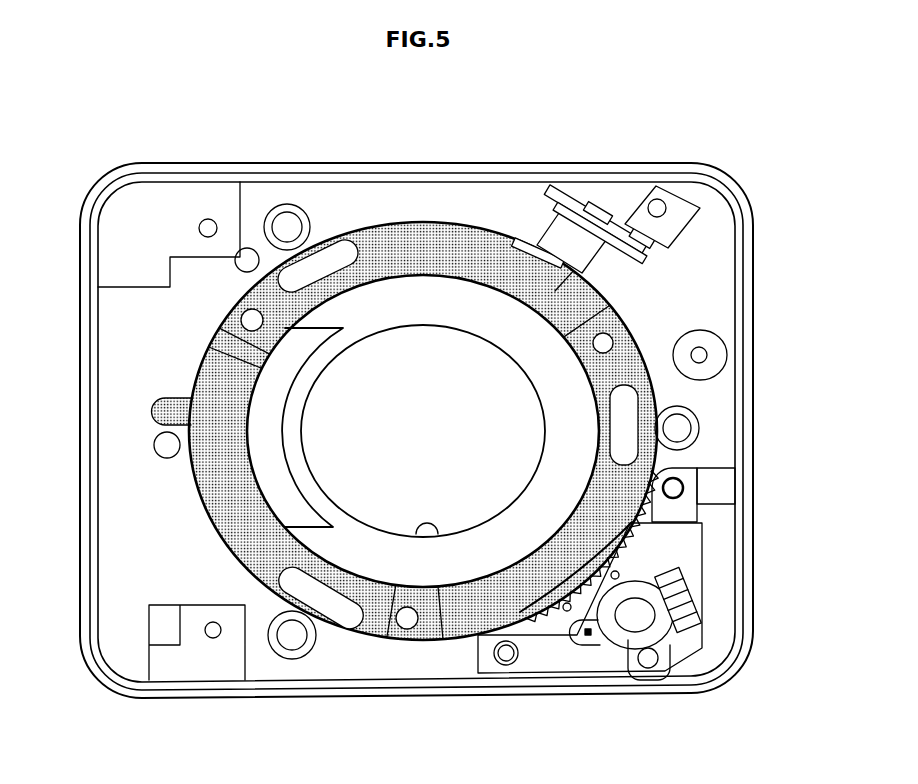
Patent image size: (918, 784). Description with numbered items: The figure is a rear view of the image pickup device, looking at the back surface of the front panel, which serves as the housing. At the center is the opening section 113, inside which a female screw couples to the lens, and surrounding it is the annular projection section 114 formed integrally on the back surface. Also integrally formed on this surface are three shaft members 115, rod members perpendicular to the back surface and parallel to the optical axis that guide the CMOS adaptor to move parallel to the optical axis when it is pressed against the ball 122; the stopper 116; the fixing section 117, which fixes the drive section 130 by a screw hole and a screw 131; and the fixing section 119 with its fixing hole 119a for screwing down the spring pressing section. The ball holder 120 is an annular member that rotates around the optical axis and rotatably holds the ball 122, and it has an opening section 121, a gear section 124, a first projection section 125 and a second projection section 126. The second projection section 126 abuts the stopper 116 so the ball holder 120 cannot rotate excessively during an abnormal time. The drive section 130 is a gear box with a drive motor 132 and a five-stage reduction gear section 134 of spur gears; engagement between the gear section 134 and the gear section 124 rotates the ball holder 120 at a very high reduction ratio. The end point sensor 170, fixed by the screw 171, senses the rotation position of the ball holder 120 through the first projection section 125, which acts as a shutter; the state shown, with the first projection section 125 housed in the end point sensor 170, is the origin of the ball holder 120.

The opening section 113 is at (438, 535).
The annular projection section 114 is at (403, 287).
The shaft member 115 is at (287, 212).
The stopper 116 is at (250, 250).
The fixing section 117 is at (720, 490).
The fixing section 119 is at (168, 203).
The fixing hole 119a is at (210, 220).
The ball holder 120 is at (452, 216).
The opening section 121 is at (343, 240).
The ball 122 is at (243, 321).
The gear section 124 is at (632, 505).
The first projection section 125 is at (522, 242).
The second projection section 126 is at (152, 411).
The drive section 130 is at (608, 652).
The screw 131 is at (690, 483).
The drive motor 132 is at (655, 637).
The gear section 134 is at (543, 592).
The end point sensor 170 is at (548, 215).
The screw 171 is at (658, 199).